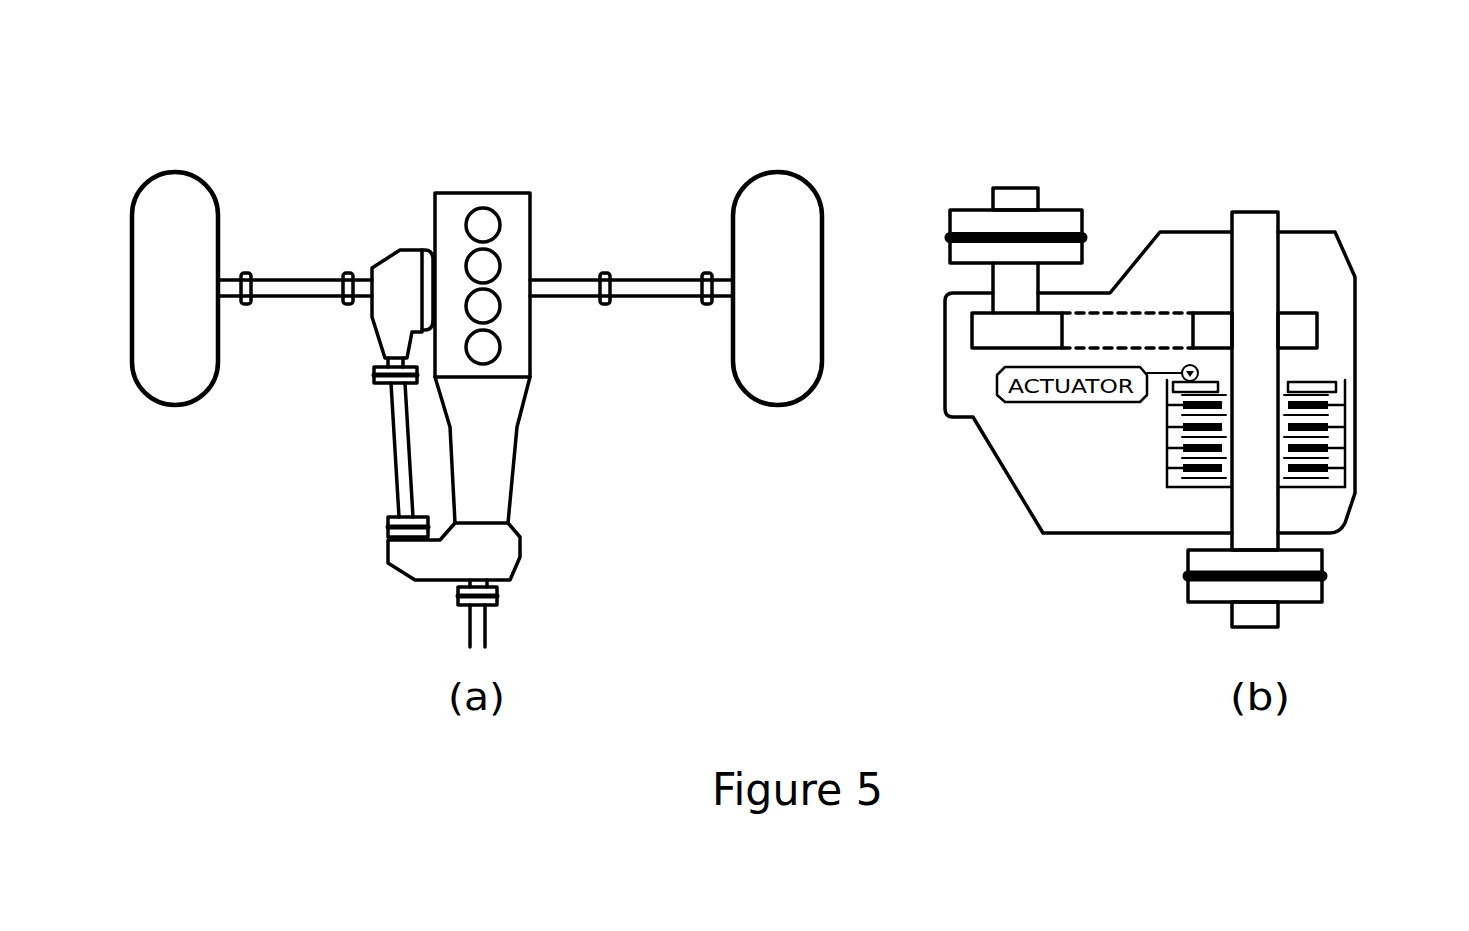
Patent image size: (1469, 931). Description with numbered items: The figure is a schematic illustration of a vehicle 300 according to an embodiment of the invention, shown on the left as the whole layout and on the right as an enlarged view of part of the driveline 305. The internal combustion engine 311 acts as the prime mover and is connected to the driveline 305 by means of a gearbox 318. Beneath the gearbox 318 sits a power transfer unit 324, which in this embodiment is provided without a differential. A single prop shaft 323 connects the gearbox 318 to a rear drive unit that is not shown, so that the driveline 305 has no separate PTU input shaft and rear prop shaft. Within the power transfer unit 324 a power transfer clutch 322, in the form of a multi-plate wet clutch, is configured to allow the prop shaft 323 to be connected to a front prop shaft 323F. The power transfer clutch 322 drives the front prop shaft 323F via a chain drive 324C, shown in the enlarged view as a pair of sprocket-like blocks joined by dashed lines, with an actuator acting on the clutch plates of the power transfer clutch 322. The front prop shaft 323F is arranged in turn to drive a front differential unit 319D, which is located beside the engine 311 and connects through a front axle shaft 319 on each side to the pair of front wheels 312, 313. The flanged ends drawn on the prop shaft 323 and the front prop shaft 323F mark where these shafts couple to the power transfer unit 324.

The vehicle 300 is at (649, 108).
The driveline 305 is at (668, 514).
The internal combustion engine 311 is at (513, 212).
The front wheel 312 is at (177, 203).
The front wheel 313 is at (777, 203).
The gearbox 318 is at (500, 473).
The front axle shaft 319 is at (303, 287).
The front differential unit 319D is at (398, 250).
The power transfer clutch 322 is at (1337, 417).
The prop shaft 323 is at (477, 617).
The front prop shaft 323F is at (402, 437).
The power transfer unit 324 is at (520, 540).
The chain drive 324C is at (1085, 313).